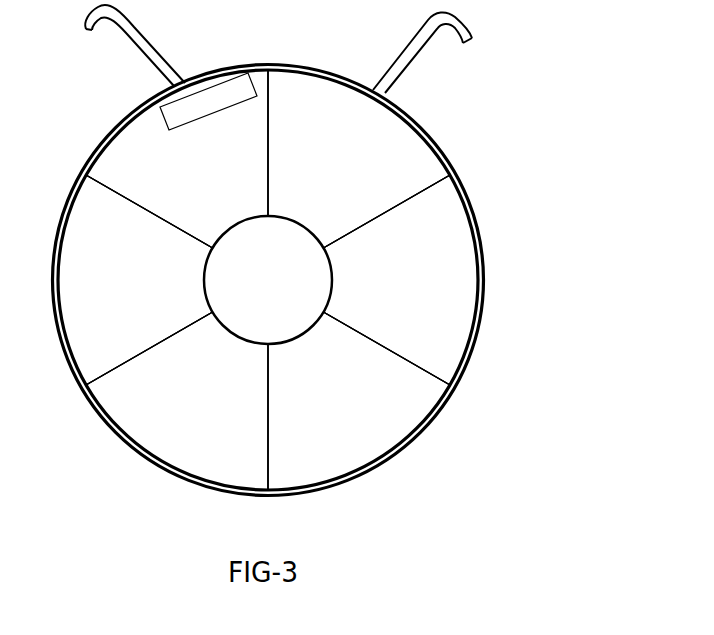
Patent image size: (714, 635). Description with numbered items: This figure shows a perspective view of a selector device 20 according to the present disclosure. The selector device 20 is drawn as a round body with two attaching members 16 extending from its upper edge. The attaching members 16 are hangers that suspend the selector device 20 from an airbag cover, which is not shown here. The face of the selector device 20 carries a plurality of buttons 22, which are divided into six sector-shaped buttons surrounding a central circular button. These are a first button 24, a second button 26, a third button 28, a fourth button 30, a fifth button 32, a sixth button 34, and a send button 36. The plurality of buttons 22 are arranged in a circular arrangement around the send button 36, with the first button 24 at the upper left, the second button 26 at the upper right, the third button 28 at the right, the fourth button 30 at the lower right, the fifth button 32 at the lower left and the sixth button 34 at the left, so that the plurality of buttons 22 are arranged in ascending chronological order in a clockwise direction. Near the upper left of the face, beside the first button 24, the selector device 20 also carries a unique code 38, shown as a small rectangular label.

The attaching members 16 is at (140, 37).
The selector device 20 is at (503, 208).
The plurality of buttons 22 is at (268, 280).
The first button 24 is at (233, 178).
The second button 26 is at (383, 176).
The third button 28 is at (445, 301).
The fourth button 30 is at (378, 414).
The fifth button 32 is at (228, 409).
The sixth button 34 is at (168, 292).
The send button 36 is at (308, 294).
The unique code 38 is at (195, 95).